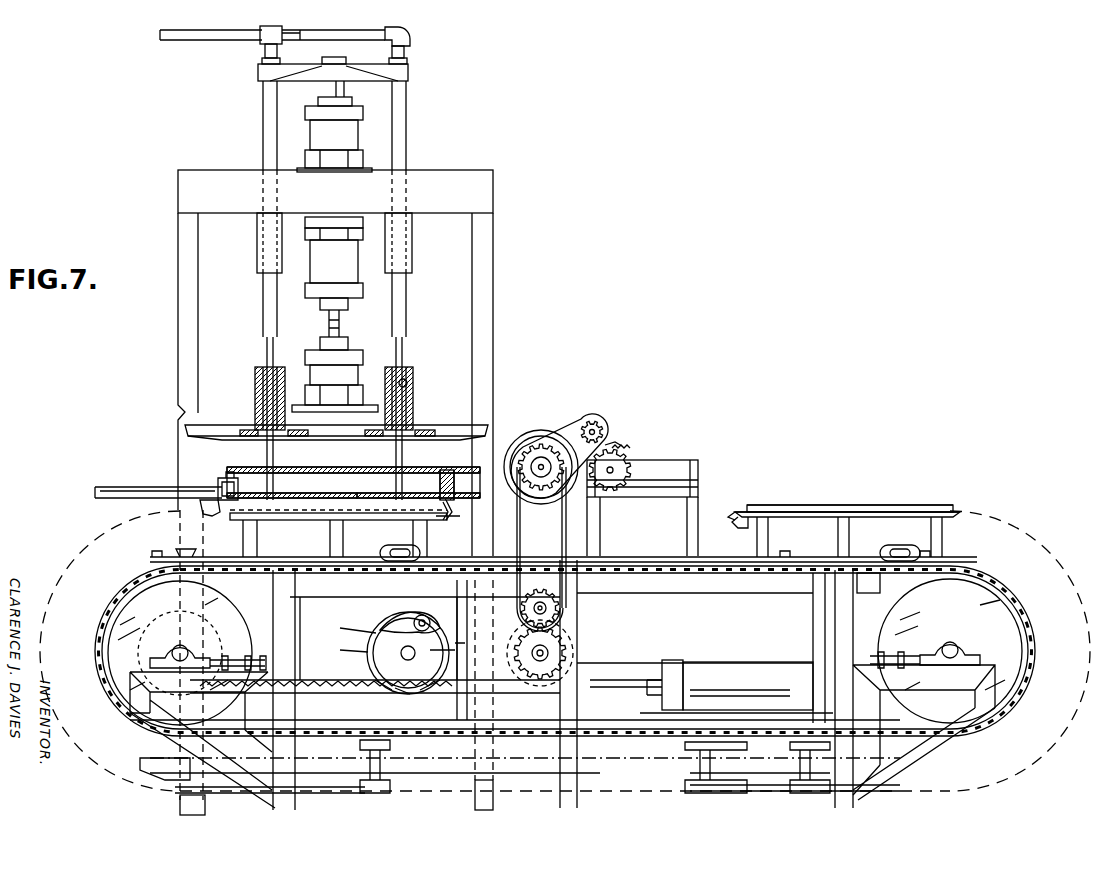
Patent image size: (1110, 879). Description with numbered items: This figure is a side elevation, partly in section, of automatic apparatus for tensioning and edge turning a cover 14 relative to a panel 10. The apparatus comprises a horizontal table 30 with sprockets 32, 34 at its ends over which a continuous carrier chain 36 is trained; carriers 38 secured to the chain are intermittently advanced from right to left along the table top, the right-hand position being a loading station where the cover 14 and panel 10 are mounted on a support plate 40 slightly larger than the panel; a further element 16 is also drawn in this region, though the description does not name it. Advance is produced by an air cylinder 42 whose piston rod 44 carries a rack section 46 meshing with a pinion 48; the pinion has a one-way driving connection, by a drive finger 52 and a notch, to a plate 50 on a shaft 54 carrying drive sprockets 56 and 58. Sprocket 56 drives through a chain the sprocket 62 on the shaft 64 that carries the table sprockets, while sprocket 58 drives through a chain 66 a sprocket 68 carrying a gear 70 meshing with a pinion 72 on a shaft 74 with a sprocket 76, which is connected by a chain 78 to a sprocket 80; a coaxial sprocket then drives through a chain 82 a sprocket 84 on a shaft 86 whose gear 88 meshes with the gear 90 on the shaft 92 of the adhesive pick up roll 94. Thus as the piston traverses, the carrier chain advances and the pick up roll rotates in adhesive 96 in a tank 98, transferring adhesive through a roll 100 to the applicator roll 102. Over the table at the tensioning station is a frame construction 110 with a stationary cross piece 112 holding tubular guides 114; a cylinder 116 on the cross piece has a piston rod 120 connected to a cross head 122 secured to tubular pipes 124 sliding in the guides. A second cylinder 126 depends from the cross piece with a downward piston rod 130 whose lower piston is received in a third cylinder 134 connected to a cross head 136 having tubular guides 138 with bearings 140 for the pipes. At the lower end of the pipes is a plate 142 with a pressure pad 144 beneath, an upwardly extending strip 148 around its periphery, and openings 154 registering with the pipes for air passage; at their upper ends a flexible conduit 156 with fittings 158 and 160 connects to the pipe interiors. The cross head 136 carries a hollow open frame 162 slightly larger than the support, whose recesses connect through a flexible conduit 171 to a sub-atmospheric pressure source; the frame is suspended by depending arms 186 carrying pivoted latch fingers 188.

The panel 10 is at (773, 506).
The cover 14 is at (916, 503).
The bracket 16 is at (728, 528).
The horizontal table 30 is at (775, 598).
The sprocket 32 is at (110, 605).
The sprocket 34 is at (1000, 630).
The continuous carrier chain 36 is at (1010, 575).
The carriers 38 is at (925, 556).
The support plate 40 is at (398, 514).
The air cylinder 42 is at (703, 660).
The piston rod 44 is at (592, 672).
The rack section 46 is at (322, 690).
The pinion 48 is at (456, 650).
The plate 50 is at (420, 700).
The drive finger 52 is at (426, 614).
The shaft 54 is at (343, 648).
The drive sprocket 56 is at (400, 612).
The drive sprocket 58 is at (347, 623).
The sprocket 62 is at (165, 585).
The shaft 64 is at (190, 651).
The chain 66 is at (305, 604).
The sprocket 68 is at (566, 658).
The gear 70 is at (566, 640).
The pinion 72 is at (562, 628).
The shaft 74 is at (540, 585).
The sprocket 76 is at (540, 582).
The chain 78 is at (526, 518).
The sprocket 80 is at (548, 460).
The chain 82 is at (556, 447).
The sprocket 84 is at (604, 432).
The shaft 86 is at (622, 446).
The gear 88 is at (624, 450).
The gear 90 is at (630, 468).
The shaft 92 is at (614, 468).
The adhesive pick up roll 94 is at (620, 486).
The adhesive 96 is at (698, 470).
The tank 98 is at (660, 492).
The roll 100 is at (600, 416).
The applicator roll 102 is at (512, 445).
The frame construction 110 is at (495, 232).
The stationary cross piece 112 is at (215, 186).
The tubular guides 114 is at (258, 248).
The cylinder 116 is at (358, 130).
The piston rod 120 is at (344, 92).
The cross head 122 is at (300, 72).
The tubular pipes 124 is at (262, 130).
The second cylinder 126 is at (343, 276).
The piston rod 130 is at (340, 320).
The third cylinder 134 is at (305, 360).
The cross head 136 is at (222, 432).
The tubular guides 138 is at (255, 385).
The bearings 140 is at (413, 385).
The plate 142 is at (338, 480).
The pressure pad 144 is at (250, 492).
The upwardly extending strip 148 is at (236, 478).
The openings 154 is at (395, 491).
The flexible conduit 156 is at (213, 33).
The fitting 158 is at (300, 38).
The fitting 160 is at (410, 37).
The hollow open frame 162 is at (212, 512).
The flexible conduit 171 is at (132, 485).
The depending arms 186 is at (448, 470).
The latch fingers 188 is at (447, 522).